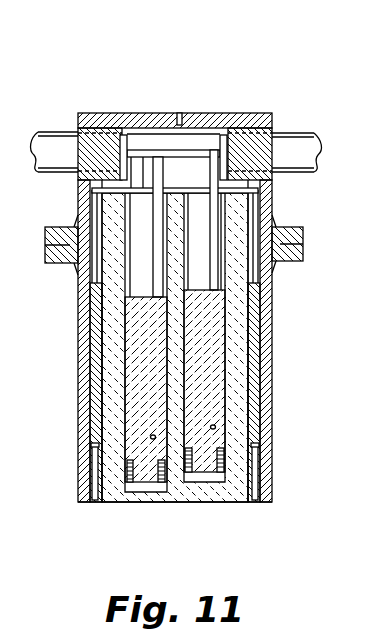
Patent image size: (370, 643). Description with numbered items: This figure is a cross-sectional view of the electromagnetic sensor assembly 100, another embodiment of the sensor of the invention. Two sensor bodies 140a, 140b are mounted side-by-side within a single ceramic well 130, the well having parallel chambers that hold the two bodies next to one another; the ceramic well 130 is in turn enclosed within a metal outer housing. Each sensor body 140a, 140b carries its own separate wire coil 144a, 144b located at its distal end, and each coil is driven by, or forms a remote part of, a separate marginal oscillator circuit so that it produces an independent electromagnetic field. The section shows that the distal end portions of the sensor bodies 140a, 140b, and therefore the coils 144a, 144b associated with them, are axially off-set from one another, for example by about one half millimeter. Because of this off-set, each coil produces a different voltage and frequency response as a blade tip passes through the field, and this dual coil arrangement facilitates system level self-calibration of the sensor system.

The electromagnetic sensor assembly 100 is at (174, 288).
The ceramic well 130 is at (243, 320).
The sensor body 140a is at (148, 362).
The sensor body 140b is at (207, 368).
The wire coil 144a is at (128, 476).
The wire coil 144b is at (188, 470).